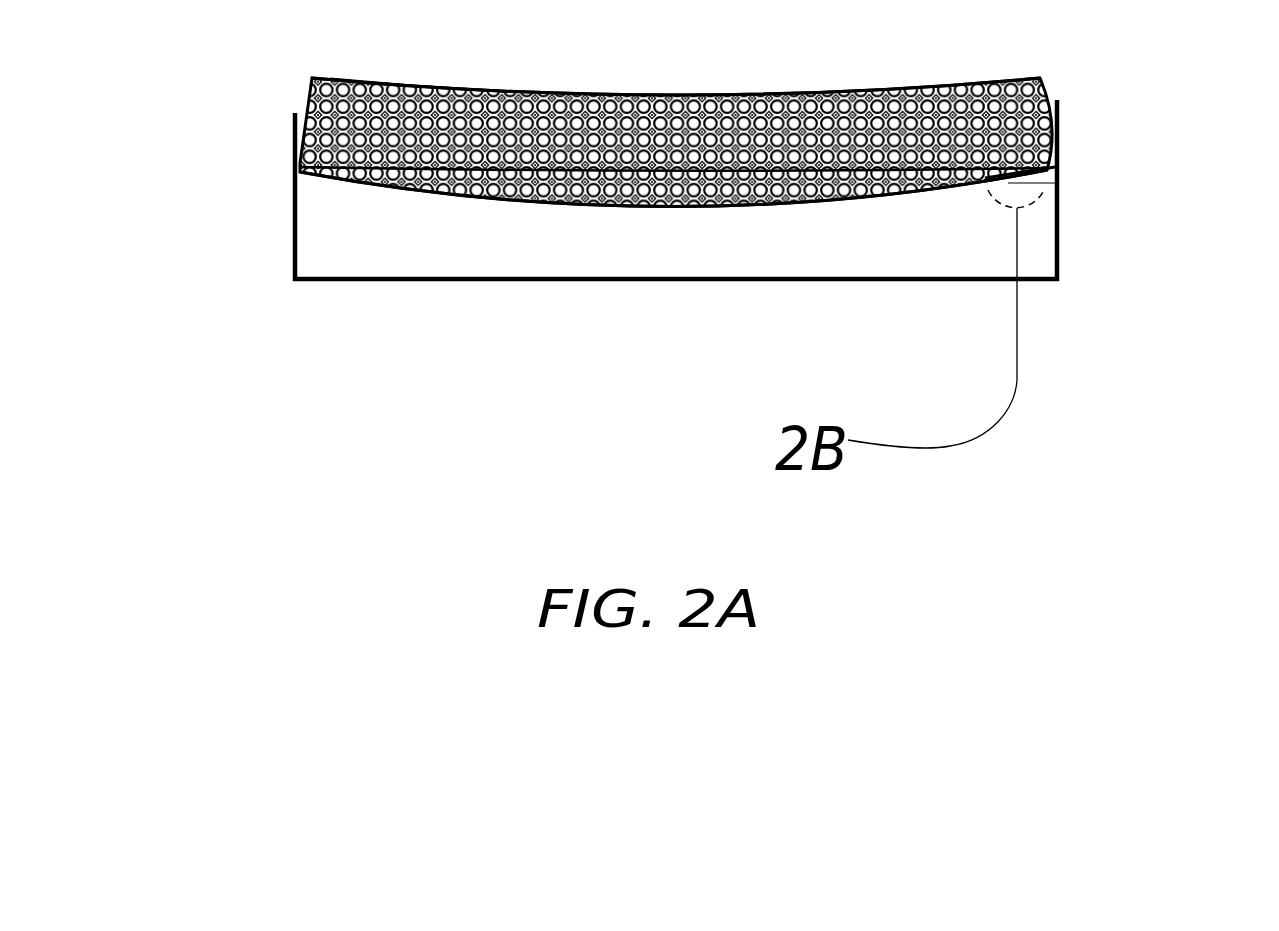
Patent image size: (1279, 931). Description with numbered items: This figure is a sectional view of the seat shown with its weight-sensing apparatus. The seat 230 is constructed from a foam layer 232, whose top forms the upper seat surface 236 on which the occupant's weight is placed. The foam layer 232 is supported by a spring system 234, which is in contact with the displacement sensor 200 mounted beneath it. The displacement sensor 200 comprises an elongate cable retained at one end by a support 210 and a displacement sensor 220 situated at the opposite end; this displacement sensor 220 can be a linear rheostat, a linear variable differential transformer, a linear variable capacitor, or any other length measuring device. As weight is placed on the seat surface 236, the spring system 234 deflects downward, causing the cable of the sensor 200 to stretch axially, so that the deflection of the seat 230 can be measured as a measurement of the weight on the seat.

The displacement sensor 200 is at (437, 195).
The support 210 is at (292, 190).
The displacement sensor 220 is at (1060, 167).
The seat 230 is at (1067, 112).
The foam layer 232 is at (395, 127).
The spring system 234 is at (292, 165).
The upper seat surface 236 is at (452, 93).